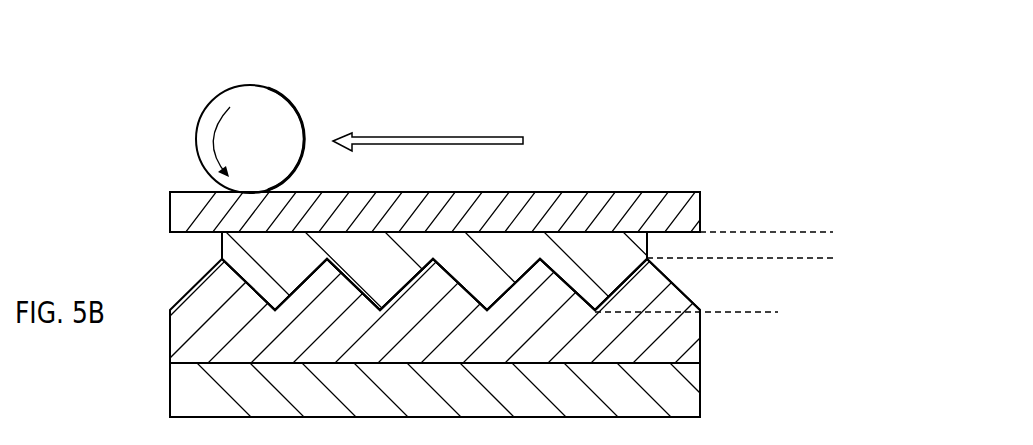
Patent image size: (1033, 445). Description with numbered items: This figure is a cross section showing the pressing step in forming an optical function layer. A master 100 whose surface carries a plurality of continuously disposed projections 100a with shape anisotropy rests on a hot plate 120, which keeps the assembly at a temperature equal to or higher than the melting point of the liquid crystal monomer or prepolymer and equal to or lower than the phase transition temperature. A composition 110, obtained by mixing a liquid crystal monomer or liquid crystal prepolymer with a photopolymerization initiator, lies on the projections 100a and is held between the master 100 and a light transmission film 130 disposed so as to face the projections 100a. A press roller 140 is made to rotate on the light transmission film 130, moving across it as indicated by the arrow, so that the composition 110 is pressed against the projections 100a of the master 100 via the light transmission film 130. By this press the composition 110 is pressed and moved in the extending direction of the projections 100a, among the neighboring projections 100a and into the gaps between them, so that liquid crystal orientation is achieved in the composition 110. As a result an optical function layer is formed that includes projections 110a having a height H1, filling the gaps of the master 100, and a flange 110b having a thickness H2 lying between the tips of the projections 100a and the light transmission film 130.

The master 100 is at (690, 338).
The projections 100a is at (662, 295).
The composition 110 is at (624, 253).
The projections 110a is at (592, 296).
The flange 110b is at (840, 232).
The hot plate 120 is at (690, 390).
The light transmission film 130 is at (700, 212).
The press roller 140 is at (248, 95).
The height of projections H1 is at (769, 259).
The thickness of flange H2 is at (823, 285).